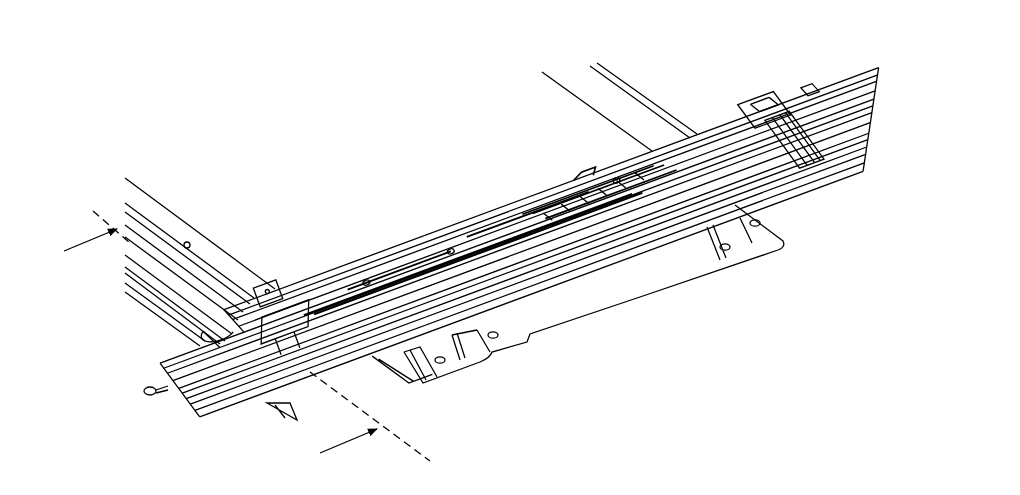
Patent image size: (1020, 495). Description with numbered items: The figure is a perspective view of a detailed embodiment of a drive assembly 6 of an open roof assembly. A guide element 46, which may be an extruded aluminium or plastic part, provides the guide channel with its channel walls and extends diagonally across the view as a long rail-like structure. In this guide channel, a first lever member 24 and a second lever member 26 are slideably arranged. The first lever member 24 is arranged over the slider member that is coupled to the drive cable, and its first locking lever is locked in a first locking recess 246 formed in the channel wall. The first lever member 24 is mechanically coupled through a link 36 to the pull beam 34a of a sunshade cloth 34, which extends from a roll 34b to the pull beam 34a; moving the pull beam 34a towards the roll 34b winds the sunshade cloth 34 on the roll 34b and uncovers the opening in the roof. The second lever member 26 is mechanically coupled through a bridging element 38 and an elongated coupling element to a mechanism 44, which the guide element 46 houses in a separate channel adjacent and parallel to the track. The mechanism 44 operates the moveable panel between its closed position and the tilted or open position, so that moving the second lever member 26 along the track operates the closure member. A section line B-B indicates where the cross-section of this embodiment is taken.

The drive assembly 6 is at (328, 103).
The first lever member 24 is at (300, 290).
The second lever member 26 is at (760, 108).
The sunshade cloth 34 is at (410, 196).
The pull beam 34a is at (167, 228).
The roll 34b is at (588, 92).
The link 36 is at (268, 298).
The bridging element 38 is at (780, 147).
The mechanism 44 is at (494, 252).
The guide element 46 is at (367, 350).
The first locking recess 246 is at (588, 168).